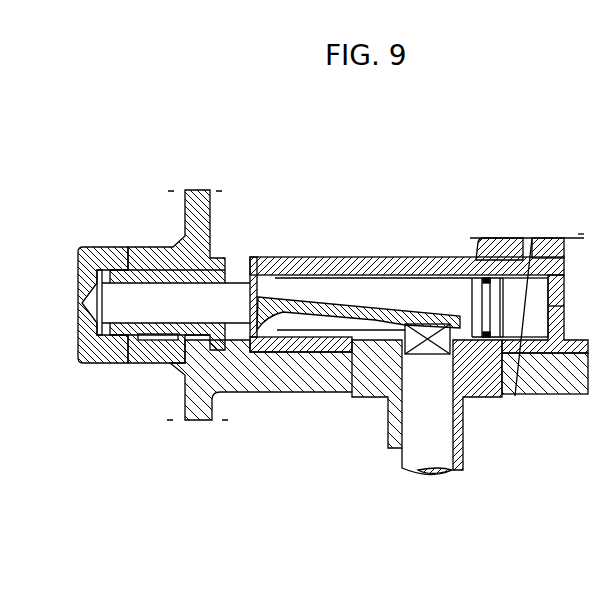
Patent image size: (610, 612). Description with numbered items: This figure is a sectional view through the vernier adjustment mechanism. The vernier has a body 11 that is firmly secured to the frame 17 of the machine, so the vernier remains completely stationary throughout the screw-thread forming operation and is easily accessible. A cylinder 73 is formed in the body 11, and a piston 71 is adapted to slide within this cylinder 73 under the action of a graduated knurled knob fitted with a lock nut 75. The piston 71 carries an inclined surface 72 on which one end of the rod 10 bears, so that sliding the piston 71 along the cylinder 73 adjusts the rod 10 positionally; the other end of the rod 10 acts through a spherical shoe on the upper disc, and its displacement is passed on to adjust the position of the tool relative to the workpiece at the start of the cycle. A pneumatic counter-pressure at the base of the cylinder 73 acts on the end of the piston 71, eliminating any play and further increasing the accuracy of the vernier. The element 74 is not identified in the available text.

The rod 10 is at (435, 457).
The body 11 is at (325, 262).
The frame 17 is at (263, 368).
The piston 71 is at (400, 290).
The inclined surface 72 is at (355, 312).
The cylinder 73 is at (510, 285).
The sleeve 74 is at (147, 258).
The lock nut 75 is at (103, 258).